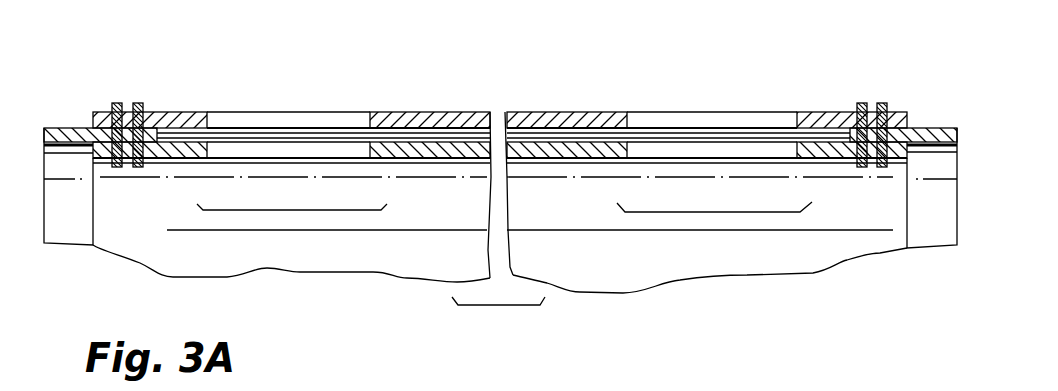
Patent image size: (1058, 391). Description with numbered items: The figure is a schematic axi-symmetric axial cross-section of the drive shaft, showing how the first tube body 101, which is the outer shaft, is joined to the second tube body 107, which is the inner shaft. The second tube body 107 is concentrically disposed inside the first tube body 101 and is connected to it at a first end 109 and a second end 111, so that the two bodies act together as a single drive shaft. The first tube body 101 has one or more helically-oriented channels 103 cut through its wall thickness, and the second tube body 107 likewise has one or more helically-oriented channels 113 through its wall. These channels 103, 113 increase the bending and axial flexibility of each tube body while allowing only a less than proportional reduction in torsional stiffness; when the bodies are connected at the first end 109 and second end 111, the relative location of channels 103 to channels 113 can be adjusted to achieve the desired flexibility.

The first tube body 101 is at (439, 157).
The first body helically-oriented channels 103 is at (292, 150).
The second tube body 107 is at (440, 118).
The first end 109 is at (79, 112).
The second end 111 is at (924, 114).
The second body helically-oriented channels 113 is at (259, 122).